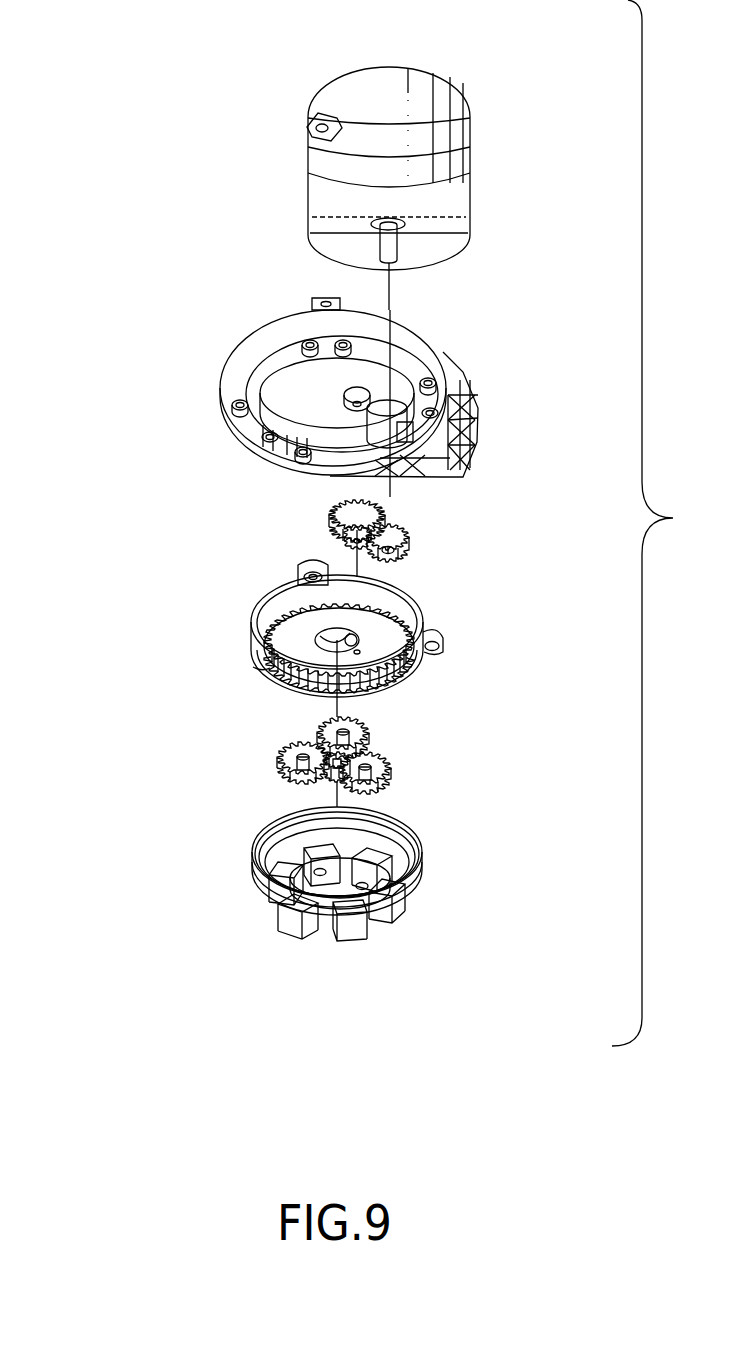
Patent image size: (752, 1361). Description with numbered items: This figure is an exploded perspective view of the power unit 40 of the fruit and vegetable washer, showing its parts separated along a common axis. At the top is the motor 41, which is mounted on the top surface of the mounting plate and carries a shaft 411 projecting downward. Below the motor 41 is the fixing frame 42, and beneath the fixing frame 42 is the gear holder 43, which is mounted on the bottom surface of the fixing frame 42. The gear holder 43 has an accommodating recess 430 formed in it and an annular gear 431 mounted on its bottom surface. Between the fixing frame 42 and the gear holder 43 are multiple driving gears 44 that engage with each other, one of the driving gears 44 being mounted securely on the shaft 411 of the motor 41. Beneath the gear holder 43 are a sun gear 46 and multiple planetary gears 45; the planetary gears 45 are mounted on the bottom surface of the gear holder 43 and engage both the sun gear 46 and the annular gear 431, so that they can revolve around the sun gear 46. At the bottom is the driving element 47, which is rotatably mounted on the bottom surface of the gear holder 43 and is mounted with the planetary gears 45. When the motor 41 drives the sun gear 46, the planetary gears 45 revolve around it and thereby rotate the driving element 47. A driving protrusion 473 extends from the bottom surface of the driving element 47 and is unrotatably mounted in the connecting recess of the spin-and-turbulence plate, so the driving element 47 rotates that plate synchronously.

The power unit 40 is at (71, 38).
The motor 41 is at (488, 76).
The shaft 411 is at (397, 244).
The fixing frame 42 is at (460, 344).
The gear holder 43 is at (253, 594).
The accommodating recess 430 is at (328, 648).
The annular gear 431 is at (384, 684).
The driving gears 44 is at (411, 537).
The planetary gears 45 is at (279, 762).
The sun gear 46 is at (356, 781).
The driving element 47 is at (421, 908).
The driving protrusion 473 is at (357, 942).